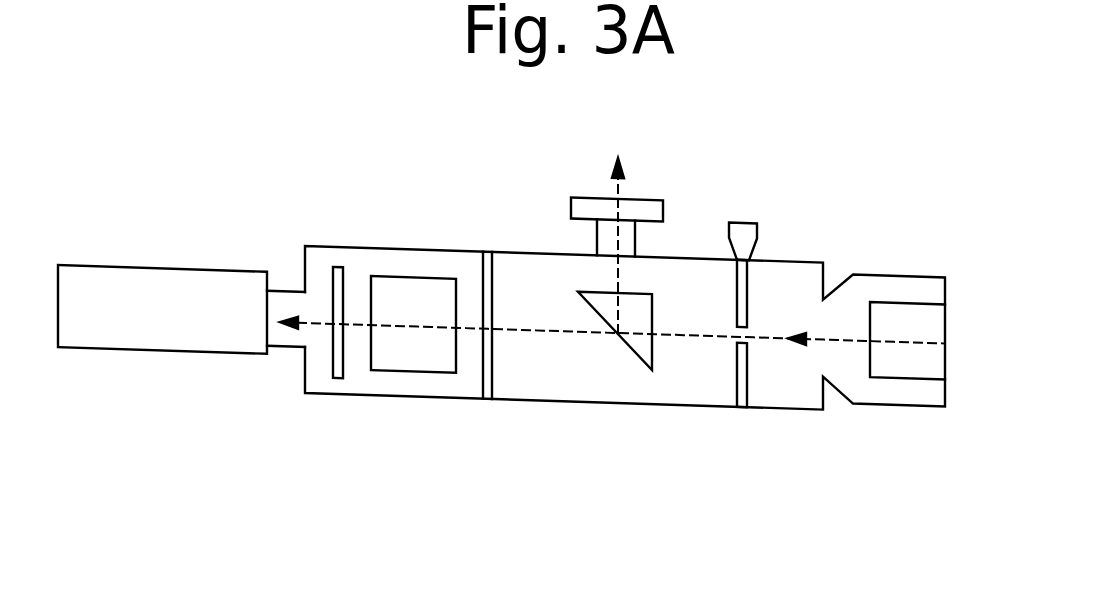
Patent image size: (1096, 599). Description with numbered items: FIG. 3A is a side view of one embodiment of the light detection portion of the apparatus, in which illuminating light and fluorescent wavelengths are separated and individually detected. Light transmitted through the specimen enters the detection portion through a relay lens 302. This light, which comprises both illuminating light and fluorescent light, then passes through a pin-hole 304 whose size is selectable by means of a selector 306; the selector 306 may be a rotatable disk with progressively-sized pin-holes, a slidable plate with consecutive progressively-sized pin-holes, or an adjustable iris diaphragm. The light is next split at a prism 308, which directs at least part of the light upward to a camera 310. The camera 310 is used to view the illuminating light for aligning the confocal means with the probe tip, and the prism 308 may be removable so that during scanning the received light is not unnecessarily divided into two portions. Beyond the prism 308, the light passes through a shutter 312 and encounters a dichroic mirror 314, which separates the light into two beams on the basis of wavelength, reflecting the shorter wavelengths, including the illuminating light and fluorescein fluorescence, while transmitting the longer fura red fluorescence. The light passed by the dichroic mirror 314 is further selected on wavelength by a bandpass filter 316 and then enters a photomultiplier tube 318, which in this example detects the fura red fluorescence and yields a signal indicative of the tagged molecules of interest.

The relay lens 302 is at (910, 303).
The pin-hole 304 is at (773, 337).
The selector 306 is at (760, 237).
The prism 308 is at (598, 318).
The camera 310 is at (657, 200).
The shutter 312 is at (482, 372).
The dichroic mirror 314 is at (398, 276).
The bandpass filter 316 is at (333, 280).
The photomultiplier tube 318 is at (222, 272).